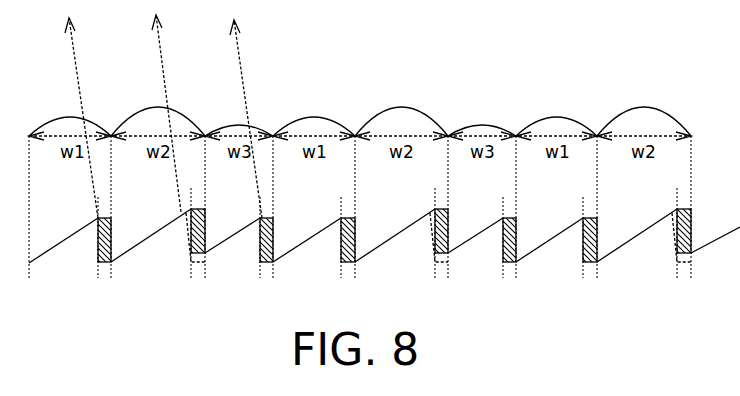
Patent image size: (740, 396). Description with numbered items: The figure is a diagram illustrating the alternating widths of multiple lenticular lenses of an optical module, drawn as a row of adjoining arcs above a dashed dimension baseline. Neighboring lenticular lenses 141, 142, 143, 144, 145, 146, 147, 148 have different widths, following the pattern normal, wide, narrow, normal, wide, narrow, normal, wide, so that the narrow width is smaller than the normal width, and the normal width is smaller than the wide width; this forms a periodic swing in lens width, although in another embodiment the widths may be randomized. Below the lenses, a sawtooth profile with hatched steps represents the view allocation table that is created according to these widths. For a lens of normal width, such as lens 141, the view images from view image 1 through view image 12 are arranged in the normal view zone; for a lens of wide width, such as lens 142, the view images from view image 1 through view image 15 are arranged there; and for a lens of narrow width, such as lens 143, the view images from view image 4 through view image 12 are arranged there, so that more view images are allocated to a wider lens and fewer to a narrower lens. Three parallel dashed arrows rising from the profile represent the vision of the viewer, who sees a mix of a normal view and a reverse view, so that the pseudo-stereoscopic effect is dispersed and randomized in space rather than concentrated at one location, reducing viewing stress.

The view image 1 is at (161, 270).
The view image 4 is at (438, 244).
The view image 12 is at (384, 230).
The view image 15 is at (394, 222).
The lenticular lens 141 is at (66, 116).
The lenticular lens 142 is at (157, 107).
The lenticular lens 143 is at (236, 124).
The lenticular lens 144 is at (316, 116).
The lenticular lens 145 is at (401, 107).
The lenticular lens 146 is at (483, 124).
The lenticular lens 147 is at (557, 116).
The lenticular lens 148 is at (644, 107).